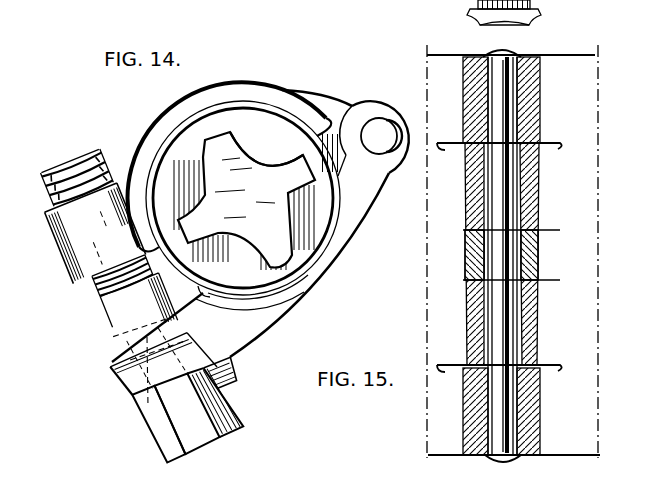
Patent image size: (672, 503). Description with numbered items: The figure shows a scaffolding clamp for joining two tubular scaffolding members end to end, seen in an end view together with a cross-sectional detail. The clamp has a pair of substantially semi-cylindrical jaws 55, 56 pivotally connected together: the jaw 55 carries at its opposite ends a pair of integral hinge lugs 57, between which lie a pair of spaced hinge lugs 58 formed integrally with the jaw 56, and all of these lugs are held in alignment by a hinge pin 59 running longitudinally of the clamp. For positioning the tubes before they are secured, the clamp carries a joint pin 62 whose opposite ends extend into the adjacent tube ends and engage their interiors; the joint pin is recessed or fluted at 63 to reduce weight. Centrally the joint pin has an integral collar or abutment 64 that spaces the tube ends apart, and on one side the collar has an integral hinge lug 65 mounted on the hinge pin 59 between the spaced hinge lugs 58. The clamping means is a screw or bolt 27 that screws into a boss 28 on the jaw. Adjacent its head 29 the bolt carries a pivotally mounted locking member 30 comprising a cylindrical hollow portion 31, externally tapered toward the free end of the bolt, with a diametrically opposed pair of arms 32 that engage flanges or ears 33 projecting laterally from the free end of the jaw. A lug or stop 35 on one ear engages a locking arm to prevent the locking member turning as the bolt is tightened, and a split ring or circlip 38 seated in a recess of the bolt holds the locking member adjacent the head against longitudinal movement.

In FIG. 14, the screw or bolt 27 is at (70, 172).
In FIG. 14, the boss 28 is at (93, 238).
In FIG. 14, the head 29 is at (218, 423).
In FIG. 14, the locking member 30 is at (226, 378).
In FIG. 14, the cylindrical hollow portion 31 is at (137, 408).
In FIG. 14, the arms or abutments 32 is at (178, 389).
In FIG. 14, the flanges or ears 33 is at (112, 370).
In FIG. 14, the lug or stop 35 is at (191, 367).
In FIG. 14, the split ring or circlip 38 is at (116, 339).
In FIG. 14, the jaw 55 is at (320, 268).
In FIG. 15, the jaw 55 is at (440, 68).
In FIG. 14, the jaw 56 is at (250, 88).
In FIG. 15, the jaw 56 is at (554, 67).
In FIG. 14, the hinge lugs 57 is at (361, 112).
In FIG. 15, the hinge lugs 57 is at (526, 104).
In FIG. 15, the spaced hinge lugs 58 is at (522, 183).
In FIG. 14, the hinge pin 59 is at (377, 128).
In FIG. 15, the hinge pin 59 is at (503, 440).
In FIG. 14, the joint pin 62 is at (240, 209).
In FIG. 14, the recess or flute 63 is at (242, 156).
In FIG. 14, the collar or abutment 64 is at (230, 263).
In FIG. 15, the hinge lug 65 is at (528, 255).